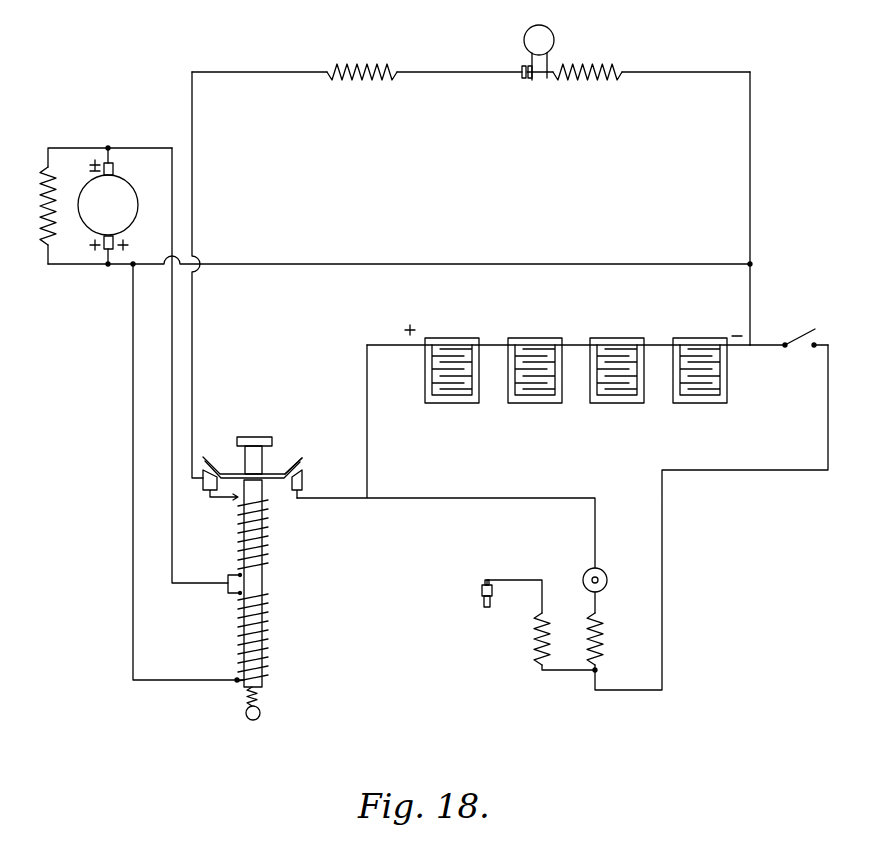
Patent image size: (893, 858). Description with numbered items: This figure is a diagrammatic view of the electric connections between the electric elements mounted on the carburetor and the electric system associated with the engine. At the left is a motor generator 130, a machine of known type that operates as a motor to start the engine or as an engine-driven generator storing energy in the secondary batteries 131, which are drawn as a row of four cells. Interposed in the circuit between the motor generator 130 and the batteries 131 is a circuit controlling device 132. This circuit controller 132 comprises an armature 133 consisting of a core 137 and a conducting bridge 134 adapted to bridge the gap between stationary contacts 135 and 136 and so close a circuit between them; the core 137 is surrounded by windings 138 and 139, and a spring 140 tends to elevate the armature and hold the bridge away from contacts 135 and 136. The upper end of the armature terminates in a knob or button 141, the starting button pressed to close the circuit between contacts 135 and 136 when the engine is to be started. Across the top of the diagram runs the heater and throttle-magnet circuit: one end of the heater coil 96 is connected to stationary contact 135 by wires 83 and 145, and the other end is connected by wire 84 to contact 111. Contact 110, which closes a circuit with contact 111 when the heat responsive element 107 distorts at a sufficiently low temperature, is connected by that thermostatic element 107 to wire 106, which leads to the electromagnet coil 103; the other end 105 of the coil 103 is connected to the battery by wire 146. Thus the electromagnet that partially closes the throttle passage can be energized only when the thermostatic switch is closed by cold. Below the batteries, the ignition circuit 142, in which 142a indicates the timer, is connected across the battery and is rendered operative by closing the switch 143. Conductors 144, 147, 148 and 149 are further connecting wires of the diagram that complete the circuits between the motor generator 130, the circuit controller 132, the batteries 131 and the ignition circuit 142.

The conductor wire 83 is at (284, 71).
The conductor wire 84 is at (438, 70).
The heater wire 96 is at (350, 68).
The coil 103 is at (602, 66).
The end of winding 105 is at (712, 75).
The end of winding 106 is at (549, 78).
The heat responsive element 107 is at (550, 32).
The contact 110 is at (528, 80).
The contact 111 is at (520, 68).
The motor generator 130 is at (118, 175).
The secondary batteries 131 is at (700, 338).
The circuit controlling device 132 is at (264, 580).
The armature 133 is at (292, 456).
The conducting bridge 134 is at (210, 459).
The stationary contact 135 is at (208, 486).
The stationary contact 136 is at (282, 497).
The core 137 is at (258, 586).
The winding 138 is at (258, 555).
The winding 139 is at (268, 628).
The spring 140 is at (245, 703).
The knob or button 141 is at (250, 437).
The ignition circuit 142 is at (580, 613).
The timer 142a is at (588, 571).
The switch 143 is at (801, 334).
The battery circuit conductor 144 is at (367, 396).
The wire 145 is at (195, 135).
The wire 146 is at (750, 212).
The conductor 147 is at (172, 320).
The conductor 148 is at (318, 262).
The conductor 149 is at (133, 610).